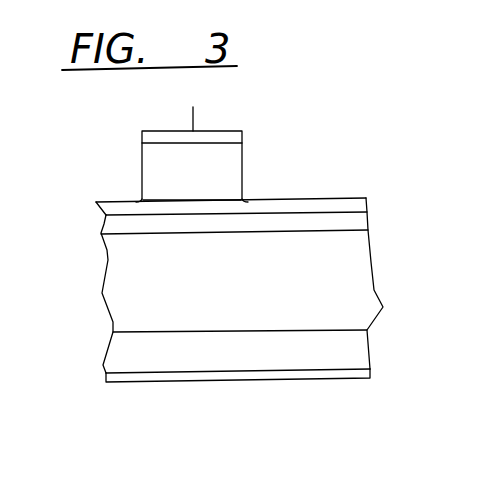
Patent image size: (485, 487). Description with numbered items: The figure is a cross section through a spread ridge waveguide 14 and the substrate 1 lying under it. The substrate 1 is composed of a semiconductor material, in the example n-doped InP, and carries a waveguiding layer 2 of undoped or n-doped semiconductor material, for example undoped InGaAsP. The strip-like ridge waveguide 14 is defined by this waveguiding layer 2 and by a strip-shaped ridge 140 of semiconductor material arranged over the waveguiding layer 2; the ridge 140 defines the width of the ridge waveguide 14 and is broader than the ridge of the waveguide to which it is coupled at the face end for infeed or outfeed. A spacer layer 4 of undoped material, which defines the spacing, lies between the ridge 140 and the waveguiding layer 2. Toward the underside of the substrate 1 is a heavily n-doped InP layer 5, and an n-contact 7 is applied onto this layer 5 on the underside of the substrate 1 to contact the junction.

The substrate 1 is at (369, 267).
The waveguiding layer 2 is at (362, 218).
The spacer layer 4 is at (158, 202).
The n+-doped layer 5 is at (352, 347).
The n-contact 7 is at (330, 379).
The strip-like ridge waveguide 14 is at (244, 178).
The strip-shaped ridge 140 is at (245, 143).